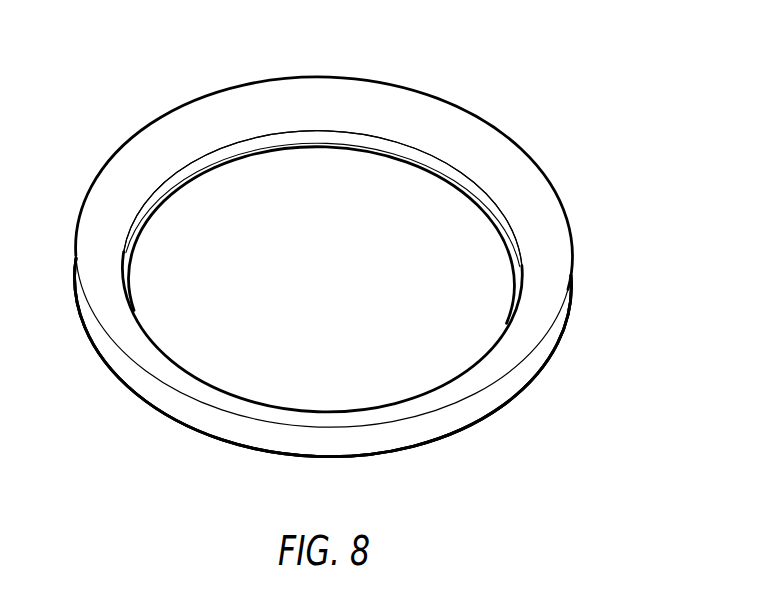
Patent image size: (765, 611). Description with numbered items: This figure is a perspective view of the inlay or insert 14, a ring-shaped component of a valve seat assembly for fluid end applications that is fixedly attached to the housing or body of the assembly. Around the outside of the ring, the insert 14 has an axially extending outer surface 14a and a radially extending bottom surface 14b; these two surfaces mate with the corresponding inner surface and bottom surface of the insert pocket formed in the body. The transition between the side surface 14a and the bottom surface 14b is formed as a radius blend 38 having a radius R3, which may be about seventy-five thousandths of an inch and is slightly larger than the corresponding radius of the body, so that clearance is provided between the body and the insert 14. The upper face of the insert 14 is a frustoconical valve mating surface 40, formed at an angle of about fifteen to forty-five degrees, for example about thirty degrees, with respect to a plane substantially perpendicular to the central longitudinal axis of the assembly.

The inlay or insert 14 is at (611, 168).
The axially extending outer surface 14a is at (547, 345).
The radially extending bottom surface 14b is at (473, 430).
The radius blend 38 is at (511, 402).
The radius R3 is at (532, 382).
The frustoconical valve mating surface 40 is at (497, 167).